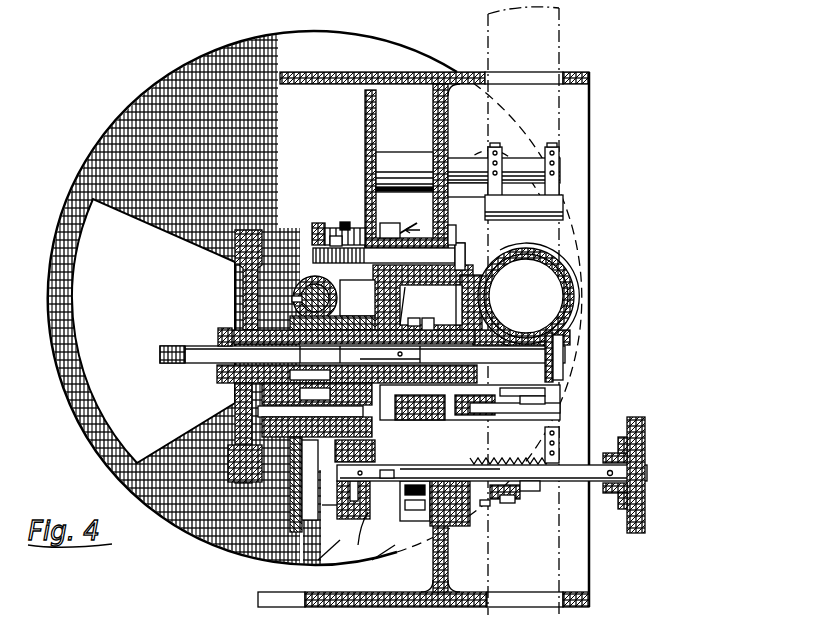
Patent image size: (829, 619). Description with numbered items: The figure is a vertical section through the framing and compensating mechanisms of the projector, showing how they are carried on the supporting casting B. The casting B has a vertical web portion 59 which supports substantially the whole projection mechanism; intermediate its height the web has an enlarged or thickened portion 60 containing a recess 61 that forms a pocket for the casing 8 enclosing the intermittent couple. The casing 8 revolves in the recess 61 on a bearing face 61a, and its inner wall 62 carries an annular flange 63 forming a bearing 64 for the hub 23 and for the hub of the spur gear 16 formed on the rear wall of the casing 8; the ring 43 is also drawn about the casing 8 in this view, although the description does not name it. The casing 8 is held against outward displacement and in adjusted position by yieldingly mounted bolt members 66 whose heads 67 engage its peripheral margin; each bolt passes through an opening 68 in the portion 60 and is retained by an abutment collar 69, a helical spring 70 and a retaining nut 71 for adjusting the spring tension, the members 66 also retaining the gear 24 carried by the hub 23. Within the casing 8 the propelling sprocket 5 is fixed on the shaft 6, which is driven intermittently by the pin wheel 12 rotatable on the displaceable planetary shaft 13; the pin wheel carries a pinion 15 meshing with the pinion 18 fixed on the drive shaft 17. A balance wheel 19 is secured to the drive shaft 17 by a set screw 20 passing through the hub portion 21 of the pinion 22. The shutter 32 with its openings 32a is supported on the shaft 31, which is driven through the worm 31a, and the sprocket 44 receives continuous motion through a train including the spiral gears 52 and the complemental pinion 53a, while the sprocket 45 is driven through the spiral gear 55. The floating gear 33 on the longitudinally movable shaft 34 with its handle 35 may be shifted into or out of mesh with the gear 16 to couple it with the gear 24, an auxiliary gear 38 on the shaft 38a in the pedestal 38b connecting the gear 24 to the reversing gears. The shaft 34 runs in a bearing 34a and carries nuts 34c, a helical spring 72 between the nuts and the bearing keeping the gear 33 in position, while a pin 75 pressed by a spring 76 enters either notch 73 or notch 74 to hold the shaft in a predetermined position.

The shutter 32 is at (318, 31).
The openings 32a is at (90, 415).
The supporting casting B is at (453, 130).
The spiral gears 52 is at (365, 113).
The web portion 59 is at (450, 163).
The enlarged or thickened portion 60 is at (410, 190).
The sprocket 44 is at (559, 162).
The retaining nut 71 is at (312, 228).
The helical spring 70 is at (340, 213).
The abutment collar 69 is at (348, 222).
The complemental pinion 53a is at (332, 236).
The bolt members 66 is at (455, 258).
The opening 68 is at (400, 238).
The propelling sprocket 5 is at (410, 248).
The casing portion 8 is at (495, 262).
The bearing ring 43 is at (568, 286).
The heads 67 is at (465, 258).
The bearing face 61a is at (462, 233).
The recess 61 is at (453, 305).
The spur gear 16 is at (412, 306).
The inner wall 62 is at (410, 323).
The pinion 18 is at (434, 325).
The annular flange 63 is at (350, 320).
The shaft 31 is at (312, 284).
The worm 31a is at (296, 296).
The set screw 20 is at (300, 322).
The balance wheel 19 is at (236, 262).
The shaft 6 is at (563, 358).
The drive shaft 17 is at (198, 346).
The hub portion 21 is at (218, 374).
The pinion 22 is at (235, 420).
The bearing 64 is at (335, 448).
The hub 23 is at (290, 480).
The spiral gear 55 is at (313, 492).
The gear 24 is at (337, 490).
The shaft 38a is at (323, 516).
The pedestal 38b is at (340, 545).
The auxiliary gear 38 is at (377, 555).
The shiftable or floating gear 33 is at (370, 538).
The pin 75 is at (400, 500).
The spring 76 is at (460, 526).
The notch 73 is at (492, 473).
The notch 74 is at (398, 473).
The helical spring 72 is at (480, 498).
The pin wheel 12 is at (530, 409).
The pinion 15 is at (522, 388).
The displaceable planetary shaft 13 is at (533, 397).
The sprocket 45 is at (560, 437).
The handle 35 is at (645, 433).
The longitudinally movable shaft 34 is at (538, 491).
The bearing 34a is at (508, 503).
The nuts 34c is at (499, 517).